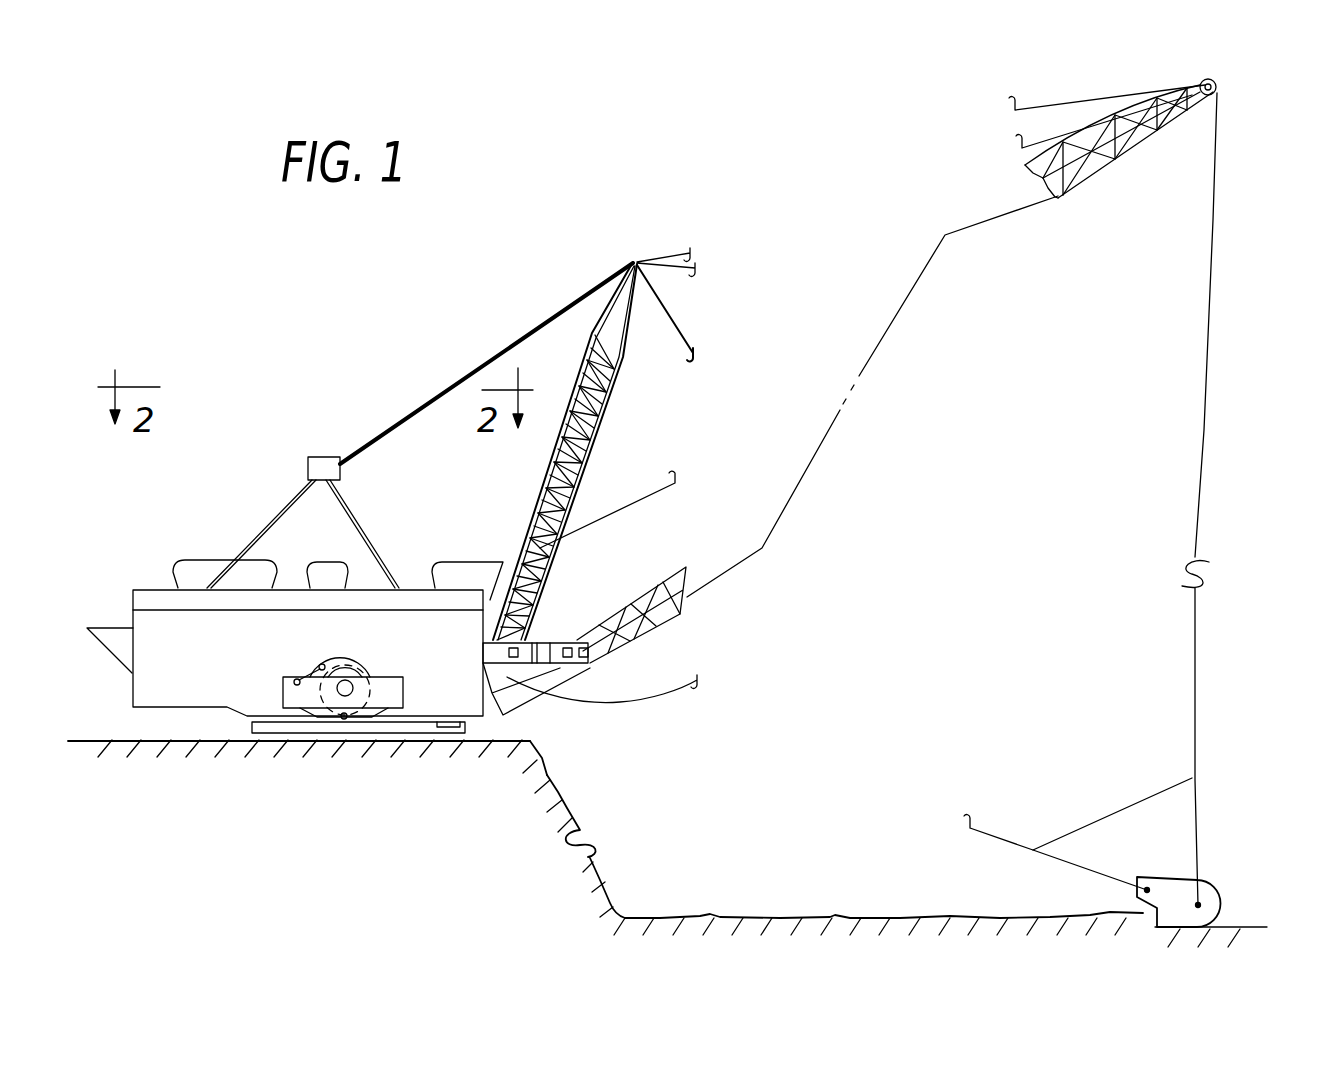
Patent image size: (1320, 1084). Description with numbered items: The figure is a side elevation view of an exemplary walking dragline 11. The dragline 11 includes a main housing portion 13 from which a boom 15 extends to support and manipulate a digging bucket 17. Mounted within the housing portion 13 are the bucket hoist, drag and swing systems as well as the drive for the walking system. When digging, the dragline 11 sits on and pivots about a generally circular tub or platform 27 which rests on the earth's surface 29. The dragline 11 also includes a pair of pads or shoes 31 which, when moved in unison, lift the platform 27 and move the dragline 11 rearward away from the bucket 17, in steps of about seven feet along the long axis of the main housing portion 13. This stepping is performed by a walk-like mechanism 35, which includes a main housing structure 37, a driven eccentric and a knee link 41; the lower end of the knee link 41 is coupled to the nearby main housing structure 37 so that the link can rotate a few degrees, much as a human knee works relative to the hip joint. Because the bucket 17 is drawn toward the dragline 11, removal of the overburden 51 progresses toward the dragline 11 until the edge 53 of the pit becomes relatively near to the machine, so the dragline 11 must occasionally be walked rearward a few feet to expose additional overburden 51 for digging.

The walking dragline 11 is at (270, 468).
The main housing portion 13 is at (150, 620).
The boom 15 is at (660, 582).
The digging bucket 17 is at (1212, 885).
The tub or platform 27 is at (462, 733).
The earth's surface 29 is at (120, 741).
The pads or shoes 31 is at (267, 727).
The walk-like mechanism 35 is at (297, 666).
The main housing structure 37 is at (283, 688).
The knee link 41 is at (310, 676).
The overburden 51 is at (568, 810).
The edge of the pit 53 is at (534, 744).